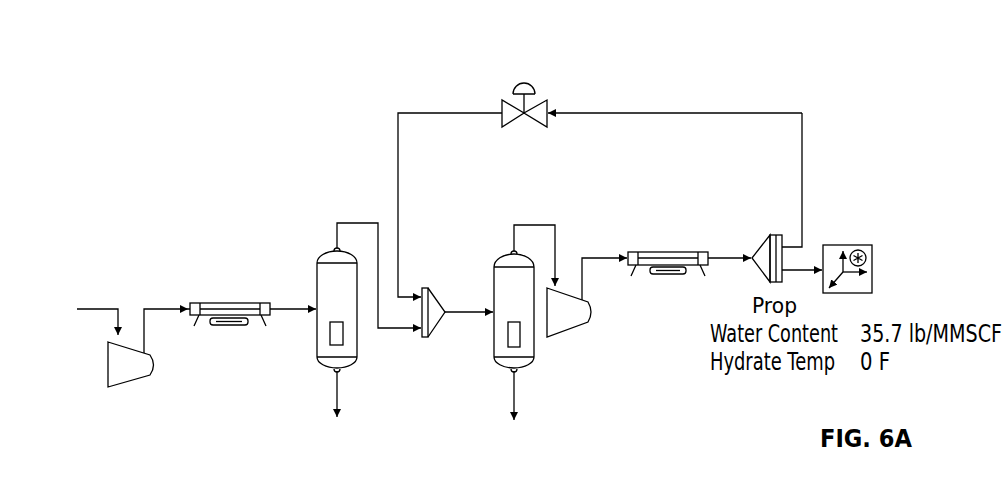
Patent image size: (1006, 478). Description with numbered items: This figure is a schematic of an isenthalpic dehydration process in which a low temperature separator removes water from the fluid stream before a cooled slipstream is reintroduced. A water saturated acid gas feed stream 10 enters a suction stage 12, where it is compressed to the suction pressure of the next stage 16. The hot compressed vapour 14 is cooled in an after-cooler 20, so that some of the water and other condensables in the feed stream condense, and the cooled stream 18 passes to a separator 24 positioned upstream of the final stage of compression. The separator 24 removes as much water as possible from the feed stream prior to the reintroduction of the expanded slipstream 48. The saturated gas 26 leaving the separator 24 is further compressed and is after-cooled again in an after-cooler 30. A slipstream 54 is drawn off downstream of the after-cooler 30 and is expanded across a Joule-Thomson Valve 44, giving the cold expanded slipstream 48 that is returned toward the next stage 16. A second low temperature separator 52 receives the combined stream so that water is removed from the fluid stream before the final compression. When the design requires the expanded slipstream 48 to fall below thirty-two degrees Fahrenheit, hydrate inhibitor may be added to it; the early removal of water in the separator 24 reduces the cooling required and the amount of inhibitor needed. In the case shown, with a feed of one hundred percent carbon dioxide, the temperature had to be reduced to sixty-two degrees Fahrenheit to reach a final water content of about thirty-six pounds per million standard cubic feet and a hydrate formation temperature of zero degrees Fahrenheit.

The water saturated acid gas feed stream 10 is at (100, 307).
The suction stage 12 is at (132, 386).
The hot compressed vapour 14 is at (162, 305).
The cooled stream 18 is at (283, 315).
The after-cooler 20 is at (232, 302).
The separator 24 is at (323, 252).
The saturated gas 26 is at (358, 222).
The after-cooler 30 is at (722, 252).
The Joule-Thomson Valve 44 is at (549, 108).
The expanded slipstream 48 is at (397, 145).
The second low temperature separator 52 is at (534, 345).
The slipstream 54 is at (745, 114).
The next stage 16 is at (592, 313).